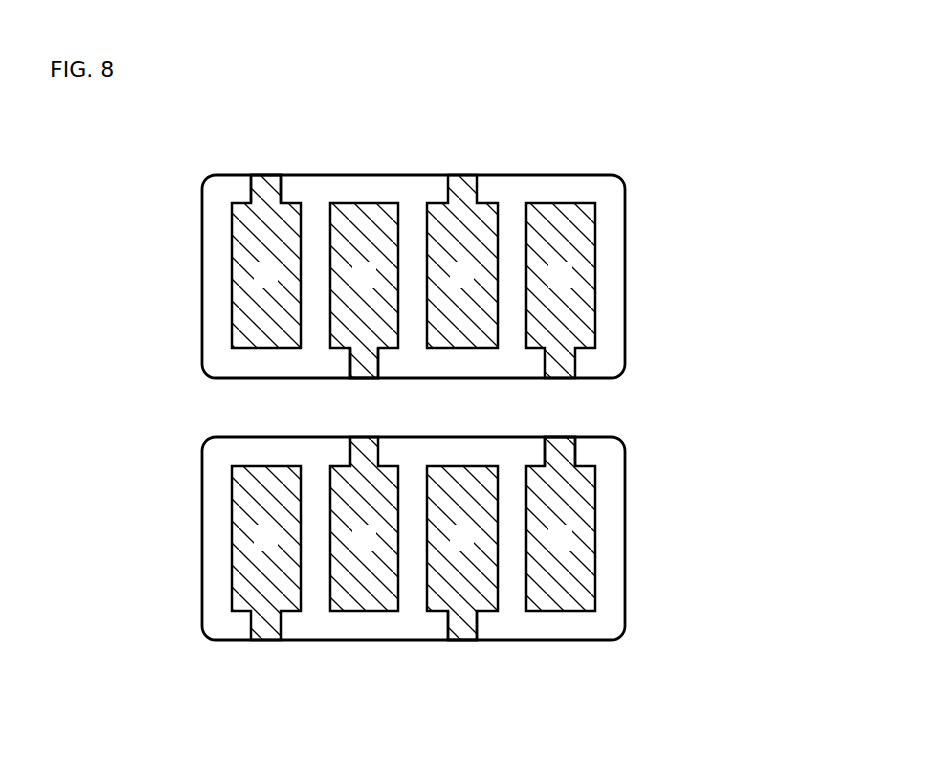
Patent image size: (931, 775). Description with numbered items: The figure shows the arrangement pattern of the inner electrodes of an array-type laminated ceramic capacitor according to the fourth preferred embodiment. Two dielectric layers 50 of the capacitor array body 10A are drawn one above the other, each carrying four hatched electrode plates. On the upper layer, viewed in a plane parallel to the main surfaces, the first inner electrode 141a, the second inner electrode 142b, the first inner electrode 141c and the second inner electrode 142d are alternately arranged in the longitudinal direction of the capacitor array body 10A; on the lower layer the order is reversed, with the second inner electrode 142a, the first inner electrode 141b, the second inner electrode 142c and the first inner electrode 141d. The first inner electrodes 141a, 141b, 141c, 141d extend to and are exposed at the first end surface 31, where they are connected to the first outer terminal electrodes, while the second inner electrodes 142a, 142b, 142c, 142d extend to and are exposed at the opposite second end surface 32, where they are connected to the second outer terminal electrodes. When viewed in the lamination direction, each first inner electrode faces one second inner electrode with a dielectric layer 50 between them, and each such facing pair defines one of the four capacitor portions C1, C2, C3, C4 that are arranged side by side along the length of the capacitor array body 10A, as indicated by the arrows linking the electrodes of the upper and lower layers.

The capacitor array body 10A is at (496, 385).
The dielectric layer 50 is at (626, 273).
The first end surface 31 is at (305, 174).
The second end surface 32 is at (395, 380).
The first inner electrode 141a is at (243, 268).
The first inner electrode 141b is at (363, 611).
The first inner electrode 141c is at (448, 192).
The first inner electrode 141d is at (563, 611).
The second inner electrode 142a is at (252, 620).
The second inner electrode 142b is at (363, 203).
The second inner electrode 142c is at (447, 620).
The second inner electrode 142d is at (563, 203).
The capacitor portion C1 is at (263, 356).
The capacitor portion C2 is at (342, 356).
The capacitor portion C3 is at (463, 356).
The capacitor portion C4 is at (538, 361).